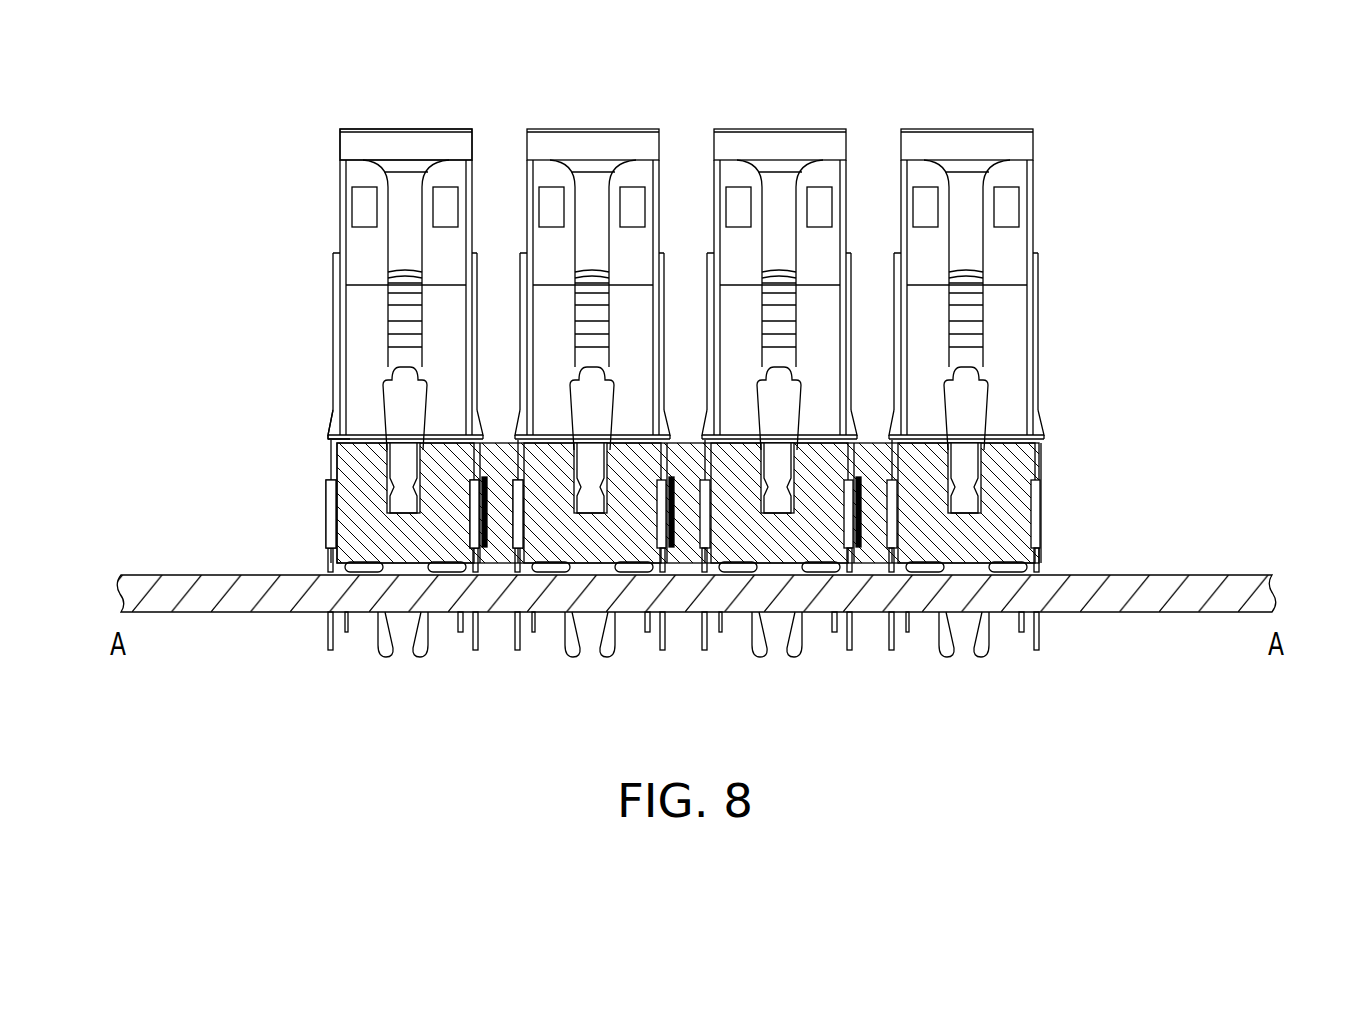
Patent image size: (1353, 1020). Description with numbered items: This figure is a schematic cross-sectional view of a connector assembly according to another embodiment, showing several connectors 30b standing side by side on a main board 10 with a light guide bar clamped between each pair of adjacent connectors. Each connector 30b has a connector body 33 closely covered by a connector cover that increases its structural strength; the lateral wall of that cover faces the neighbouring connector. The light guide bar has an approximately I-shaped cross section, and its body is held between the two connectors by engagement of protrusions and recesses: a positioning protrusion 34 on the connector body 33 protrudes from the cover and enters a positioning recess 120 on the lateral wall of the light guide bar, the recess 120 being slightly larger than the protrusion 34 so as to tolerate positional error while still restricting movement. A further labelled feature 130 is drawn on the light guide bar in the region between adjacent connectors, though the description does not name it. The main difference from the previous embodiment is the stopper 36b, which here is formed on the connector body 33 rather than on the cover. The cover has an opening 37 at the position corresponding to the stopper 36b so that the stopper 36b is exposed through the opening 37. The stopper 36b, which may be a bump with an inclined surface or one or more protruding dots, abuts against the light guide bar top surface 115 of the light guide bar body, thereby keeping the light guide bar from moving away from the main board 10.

The main board 10 is at (1240, 597).
The connector 30b is at (407, 143).
The connector body 33 is at (340, 195).
The opening 37 is at (333, 410).
The stopper 36b is at (330, 437).
The light guide bar top surface 115 is at (686, 436).
The positioning protrusion 34 is at (327, 517).
The positioning recess 120 is at (472, 488).
The latch bar 130 is at (485, 500).